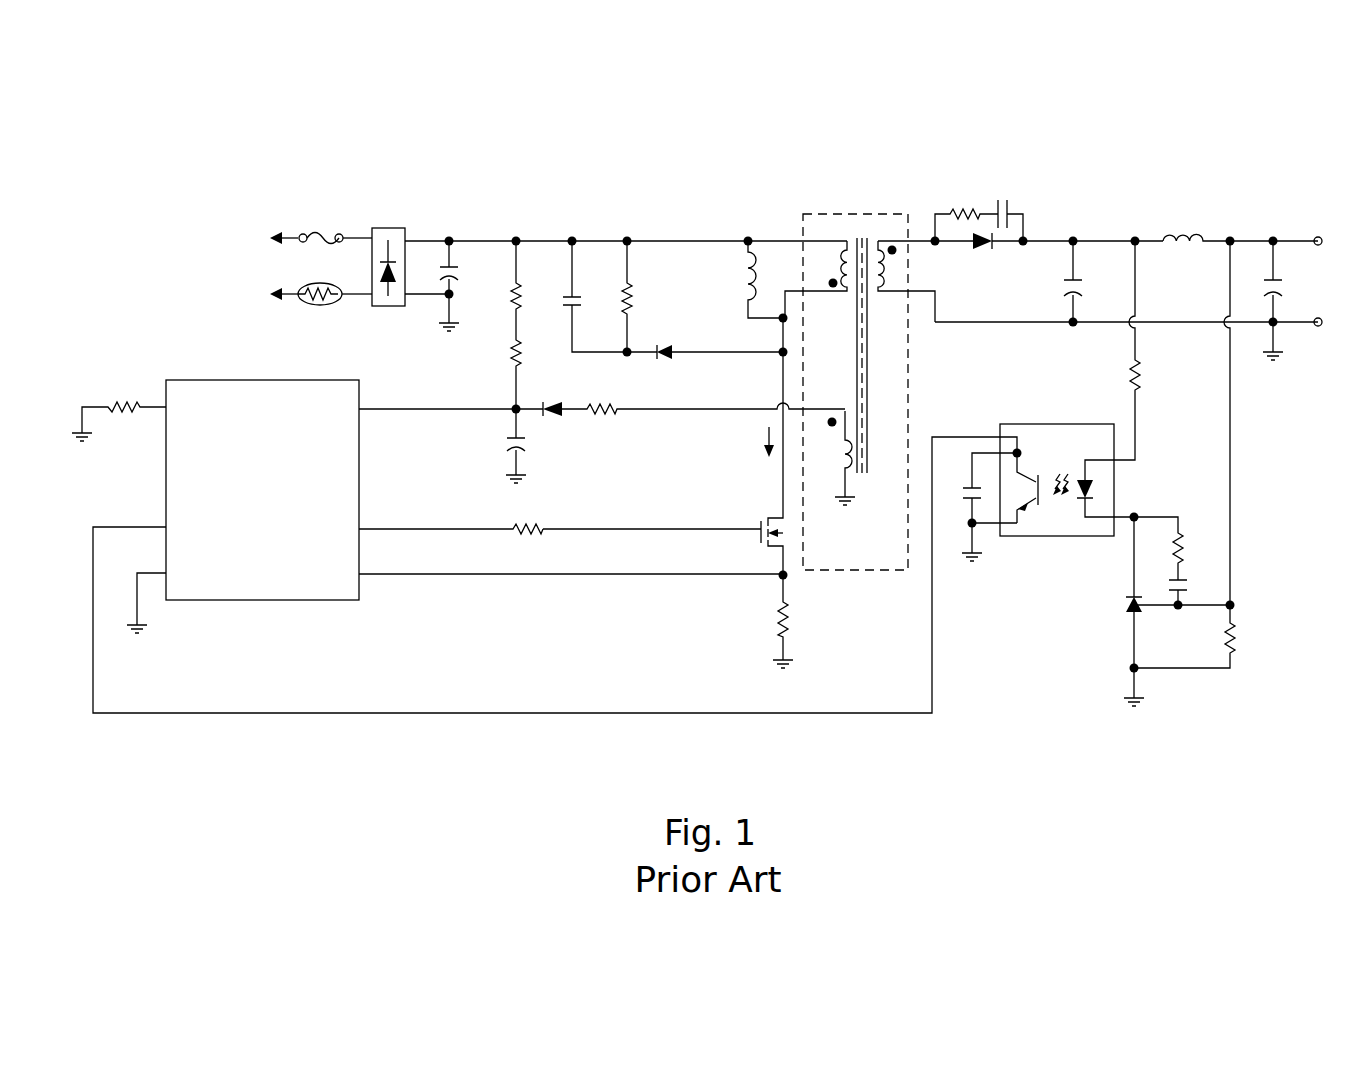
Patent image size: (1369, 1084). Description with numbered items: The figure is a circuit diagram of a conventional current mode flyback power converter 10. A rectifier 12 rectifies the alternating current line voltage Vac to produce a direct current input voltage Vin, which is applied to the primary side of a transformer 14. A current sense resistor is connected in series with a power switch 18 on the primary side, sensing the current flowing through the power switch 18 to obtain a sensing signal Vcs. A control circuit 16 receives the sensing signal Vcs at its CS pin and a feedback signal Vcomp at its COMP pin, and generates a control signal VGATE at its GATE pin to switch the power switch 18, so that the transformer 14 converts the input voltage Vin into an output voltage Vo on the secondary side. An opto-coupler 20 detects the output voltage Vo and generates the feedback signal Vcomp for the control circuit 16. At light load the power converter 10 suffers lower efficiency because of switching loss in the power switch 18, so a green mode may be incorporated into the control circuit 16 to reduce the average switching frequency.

The current mode flyback power converter 10 is at (1311, 190).
The rectifier 12 is at (386, 228).
The transformer 14 is at (823, 214).
The control circuit 16 is at (263, 380).
The power switch 18 is at (760, 512).
The opto-coupler 20 is at (1059, 424).